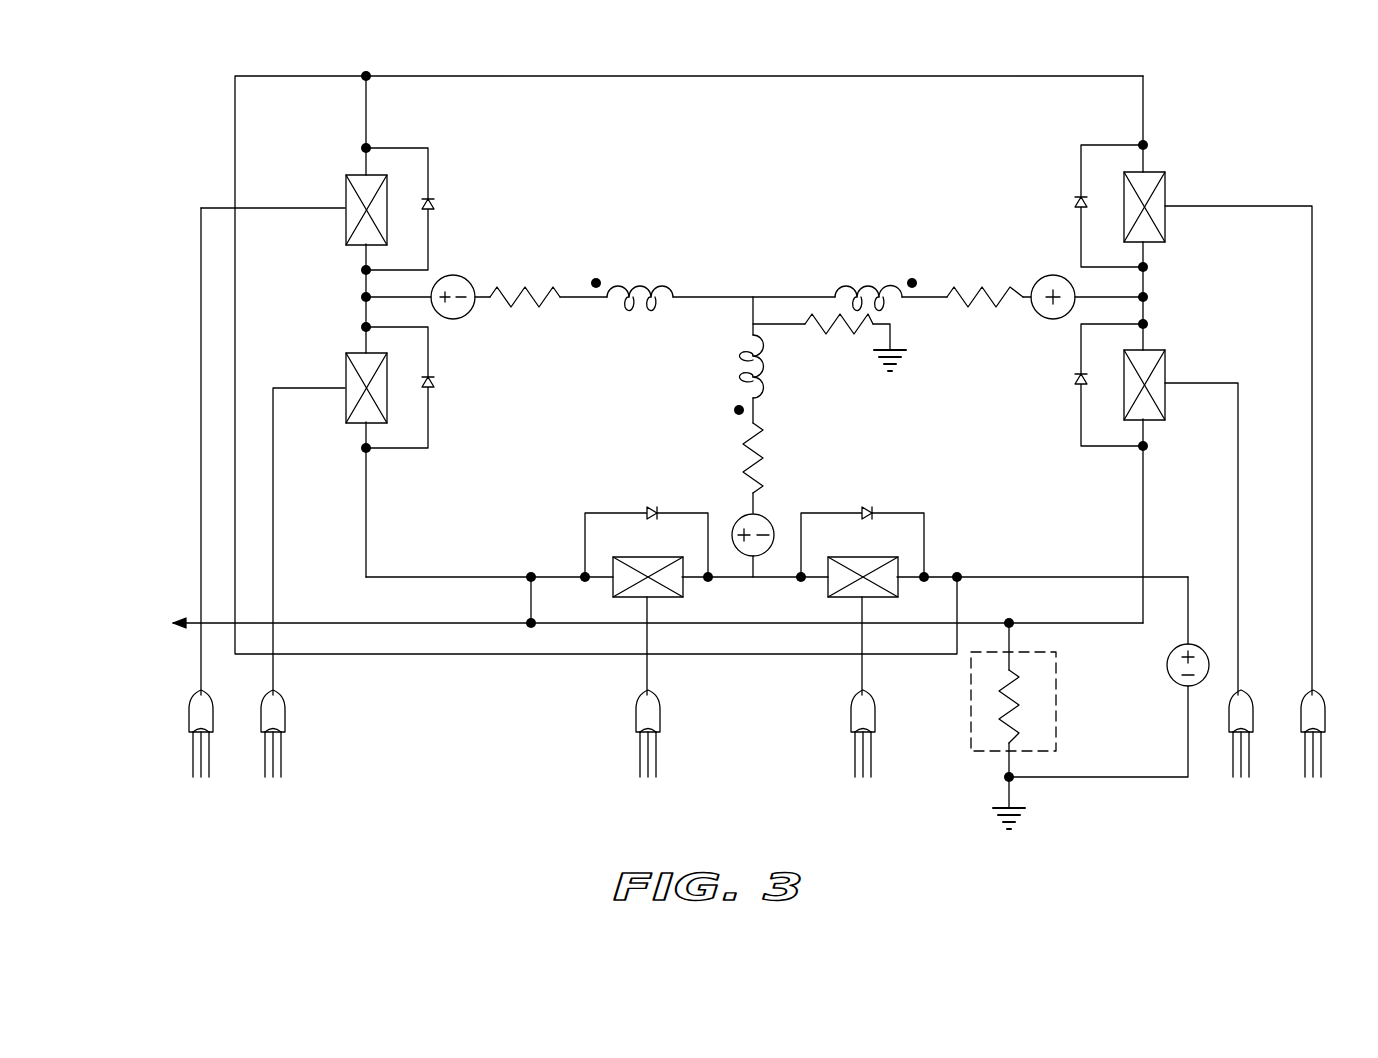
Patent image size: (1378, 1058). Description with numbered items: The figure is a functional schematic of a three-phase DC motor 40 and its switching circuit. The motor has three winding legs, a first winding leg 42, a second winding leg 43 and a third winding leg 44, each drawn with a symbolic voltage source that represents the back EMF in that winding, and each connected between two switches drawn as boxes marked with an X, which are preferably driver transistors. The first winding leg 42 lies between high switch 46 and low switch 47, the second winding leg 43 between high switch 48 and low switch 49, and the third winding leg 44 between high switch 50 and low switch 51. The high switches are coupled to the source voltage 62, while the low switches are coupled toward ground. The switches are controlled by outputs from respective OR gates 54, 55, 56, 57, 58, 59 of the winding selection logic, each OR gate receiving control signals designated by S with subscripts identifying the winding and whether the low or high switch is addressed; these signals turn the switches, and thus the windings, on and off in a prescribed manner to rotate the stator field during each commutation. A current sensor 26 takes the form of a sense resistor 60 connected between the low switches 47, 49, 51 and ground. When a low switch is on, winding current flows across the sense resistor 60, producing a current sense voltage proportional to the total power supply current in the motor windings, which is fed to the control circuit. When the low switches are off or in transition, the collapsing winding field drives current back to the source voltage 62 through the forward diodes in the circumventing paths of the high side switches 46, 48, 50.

The three-phase DC motor 40 is at (648, 52).
The first winding leg 42 is at (617, 282).
The second winding leg 43 is at (895, 280).
The third winding leg 44 is at (742, 400).
The high switch 46 is at (350, 220).
The low switch 47 is at (345, 375).
The high switch 48 is at (1165, 195).
The low switch 49 is at (1165, 374).
The high switch 50 is at (835, 586).
The low switch 51 is at (683, 590).
The OR gate 54 is at (198, 715).
The OR gate 55 is at (278, 713).
The OR gate 56 is at (1320, 707).
The OR gate 57 is at (1245, 705).
The OR gate 58 is at (866, 713).
The OR gate 59 is at (652, 713).
The sense resistor 60 is at (1003, 690).
The current sensor 26 is at (1057, 712).
The source voltage Vcc 62 is at (1168, 663).